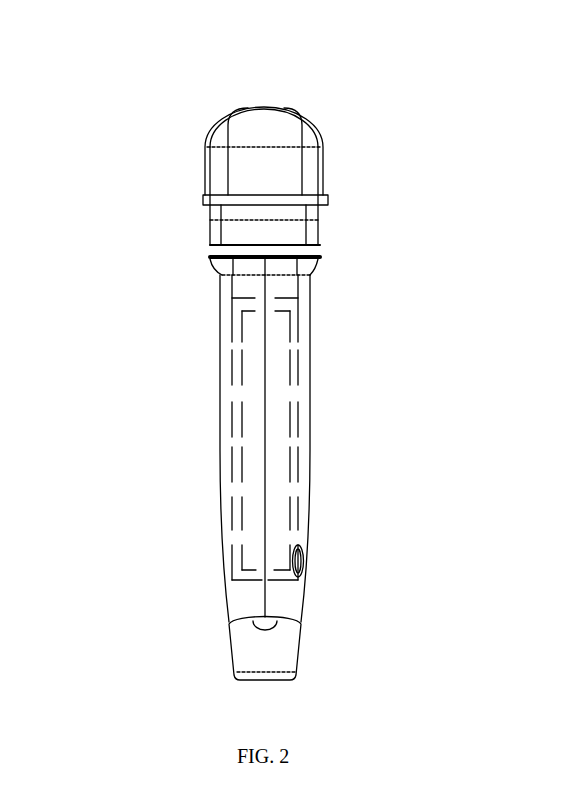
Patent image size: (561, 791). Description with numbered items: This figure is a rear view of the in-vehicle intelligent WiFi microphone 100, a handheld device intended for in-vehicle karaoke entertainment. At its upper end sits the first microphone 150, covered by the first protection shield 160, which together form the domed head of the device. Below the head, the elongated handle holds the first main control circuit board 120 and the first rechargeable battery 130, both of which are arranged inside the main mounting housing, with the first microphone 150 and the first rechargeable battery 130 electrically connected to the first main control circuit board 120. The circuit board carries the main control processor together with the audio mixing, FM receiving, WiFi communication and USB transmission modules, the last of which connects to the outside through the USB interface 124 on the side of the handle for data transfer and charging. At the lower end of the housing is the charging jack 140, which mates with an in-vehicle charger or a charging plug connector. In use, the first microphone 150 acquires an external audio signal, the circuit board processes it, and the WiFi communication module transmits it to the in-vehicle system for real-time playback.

The in-vehicle intelligent WiFi microphone 100 is at (258, 372).
The first main control circuit board 120 is at (302, 468).
The USB interface 124 is at (370, 531).
The first rechargeable battery 130 is at (336, 446).
The charging jack 140 is at (298, 624).
The first microphone 150 is at (198, 270).
The first protection shield 160 is at (195, 194).